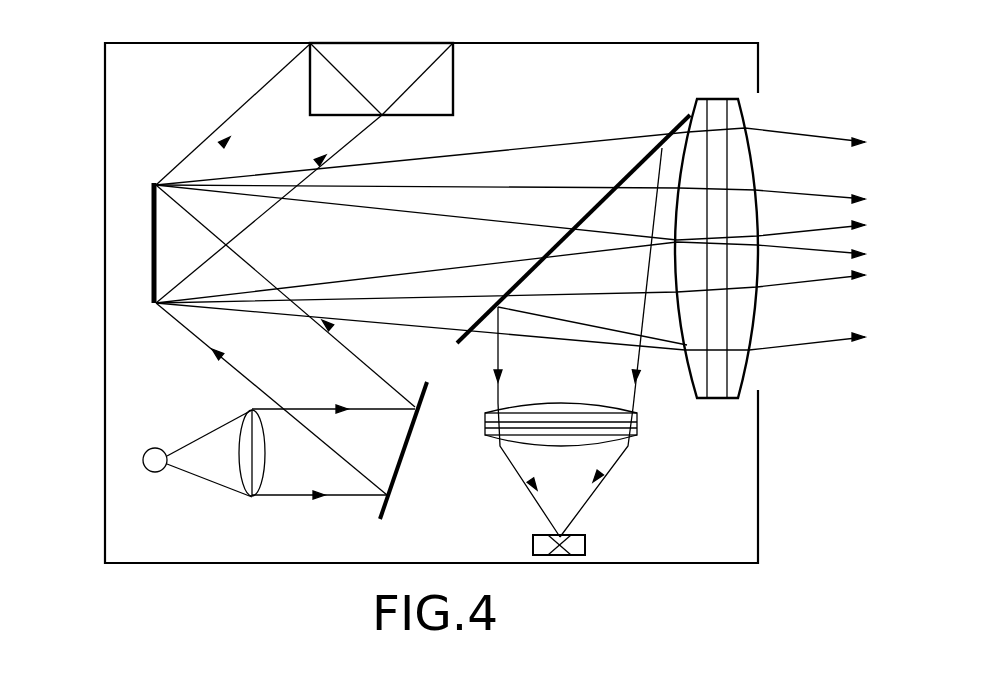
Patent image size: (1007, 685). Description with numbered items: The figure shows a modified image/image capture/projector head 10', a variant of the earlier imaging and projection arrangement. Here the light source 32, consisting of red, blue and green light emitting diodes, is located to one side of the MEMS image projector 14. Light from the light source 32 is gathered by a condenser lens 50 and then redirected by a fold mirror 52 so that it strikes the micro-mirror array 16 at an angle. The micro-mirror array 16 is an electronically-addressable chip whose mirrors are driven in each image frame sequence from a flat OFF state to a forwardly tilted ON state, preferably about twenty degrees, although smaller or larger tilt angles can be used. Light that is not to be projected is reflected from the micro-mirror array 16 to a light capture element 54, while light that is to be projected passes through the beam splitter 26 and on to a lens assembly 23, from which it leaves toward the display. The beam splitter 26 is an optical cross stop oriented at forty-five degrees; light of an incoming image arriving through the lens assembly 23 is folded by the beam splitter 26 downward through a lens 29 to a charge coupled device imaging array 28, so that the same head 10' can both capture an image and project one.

The image/image capture/projector head 10' is at (387, 303).
The MEMS image projector 14 is at (182, 237).
The micro-mirror array 16 is at (155, 257).
The lens assembly 23 is at (745, 110).
The beam splitter 26 is at (528, 275).
The charge coupled device (CCD) imaging array 28 is at (533, 545).
The lens 29 is at (638, 423).
The light source 32 is at (157, 472).
The condenser lens 50 is at (262, 450).
The fold mirror 52 is at (405, 458).
The light capture element 54 is at (453, 84).